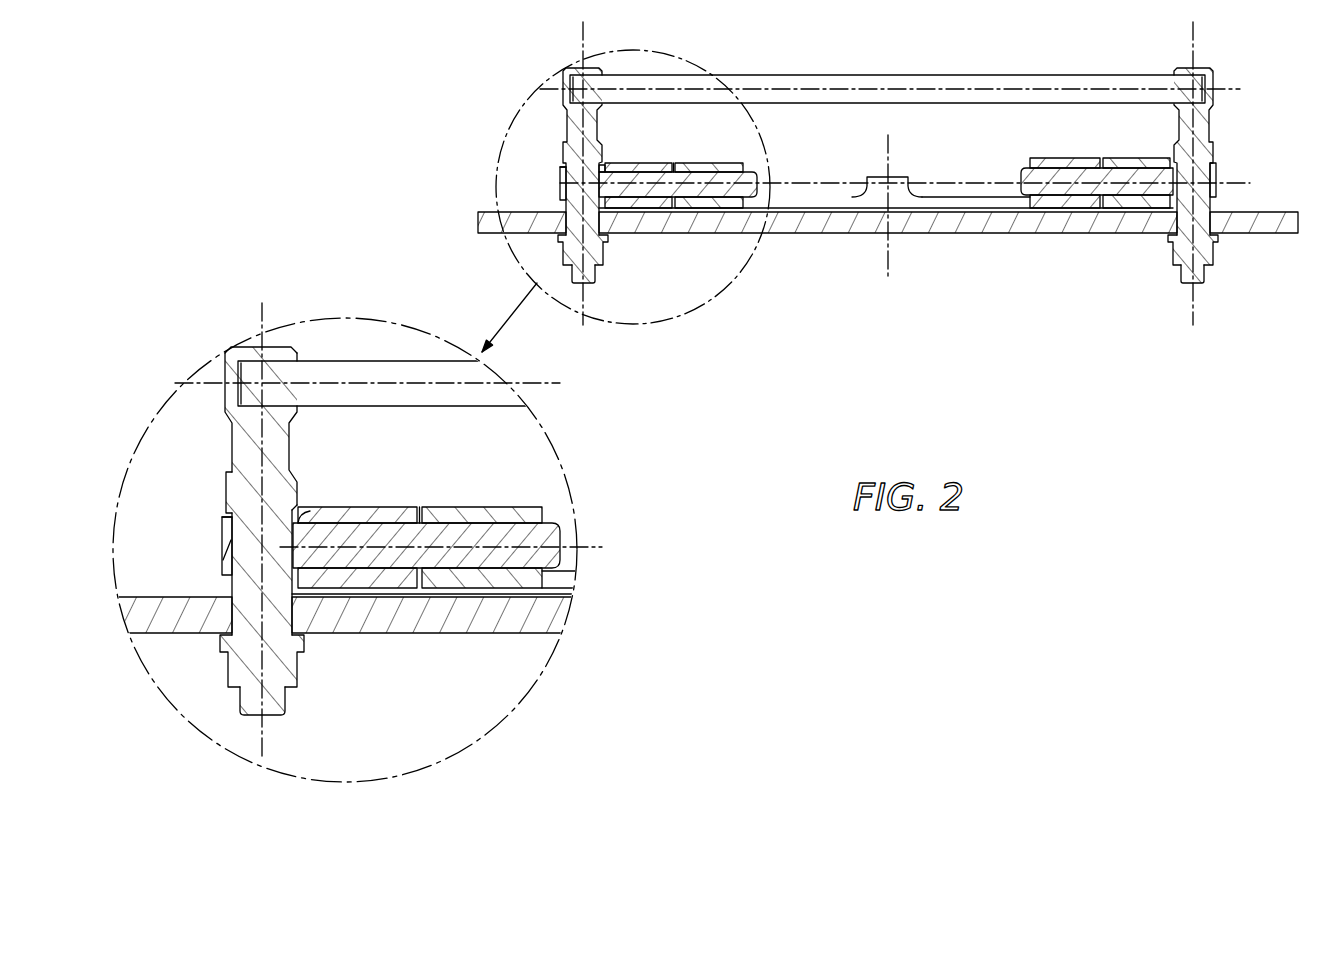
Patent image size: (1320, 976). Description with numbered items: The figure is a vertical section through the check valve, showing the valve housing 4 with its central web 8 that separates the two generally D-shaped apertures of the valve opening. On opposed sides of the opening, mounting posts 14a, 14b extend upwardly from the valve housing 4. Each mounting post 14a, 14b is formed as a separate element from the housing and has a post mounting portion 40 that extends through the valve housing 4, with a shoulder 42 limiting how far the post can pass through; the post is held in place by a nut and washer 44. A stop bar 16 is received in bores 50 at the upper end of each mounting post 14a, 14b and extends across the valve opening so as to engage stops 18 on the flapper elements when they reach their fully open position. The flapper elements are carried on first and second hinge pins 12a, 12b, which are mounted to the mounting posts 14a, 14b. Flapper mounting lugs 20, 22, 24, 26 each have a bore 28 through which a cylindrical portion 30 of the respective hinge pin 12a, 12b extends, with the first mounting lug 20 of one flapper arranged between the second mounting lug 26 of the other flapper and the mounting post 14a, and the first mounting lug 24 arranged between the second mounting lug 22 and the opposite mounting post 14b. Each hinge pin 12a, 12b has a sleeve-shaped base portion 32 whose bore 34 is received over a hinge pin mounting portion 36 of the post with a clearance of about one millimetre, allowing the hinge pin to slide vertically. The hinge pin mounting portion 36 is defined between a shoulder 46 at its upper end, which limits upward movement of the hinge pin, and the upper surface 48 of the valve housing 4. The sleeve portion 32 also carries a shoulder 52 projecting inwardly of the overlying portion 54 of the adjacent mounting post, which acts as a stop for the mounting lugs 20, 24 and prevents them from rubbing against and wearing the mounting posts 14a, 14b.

The valve housing 4 is at (1263, 228).
The central web 8 is at (945, 228).
The first hinge pin 12a is at (760, 178).
The second hinge pin 12b is at (1020, 175).
The mounting post 14a is at (570, 124).
The mounting post 14b is at (1200, 123).
The stop bar 16 is at (951, 76).
The stop 18 is at (900, 176).
The first mounting lug 20 is at (628, 165).
The second mounting lug 22 is at (1062, 162).
The first mounting lug 24 is at (1140, 162).
The second mounting lug 26 is at (720, 165).
The bore 28 is at (663, 176).
The cylindrical portion 30 is at (690, 190).
The base portion 32 is at (562, 183).
The bore 34 is at (572, 213).
The hinge pin mounting portion 36 is at (598, 170).
The post mounting portion 40 is at (1188, 284).
The shoulder 42 is at (288, 598).
The nut and washer 44 is at (297, 680).
The shoulder 46 is at (295, 507).
The upper surface 48 is at (150, 598).
The bore 50 is at (276, 349).
The shoulder 52 is at (308, 517).
The overlying portion 54 is at (226, 490).